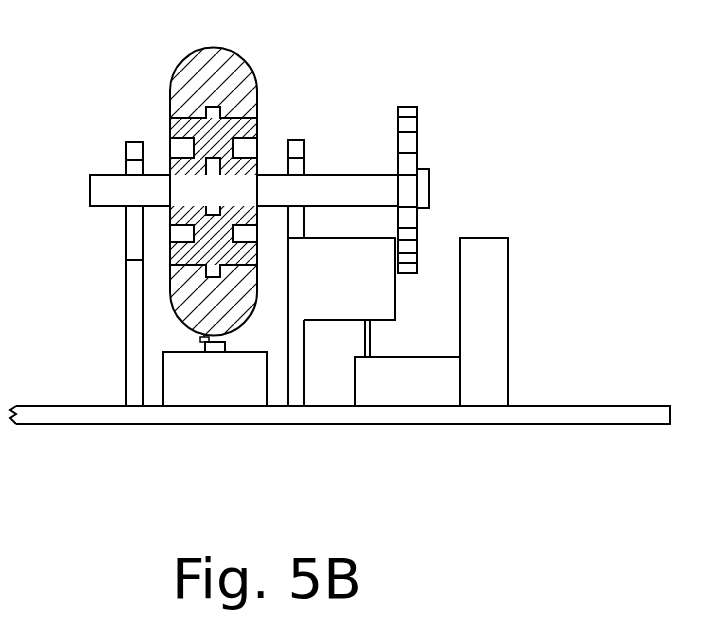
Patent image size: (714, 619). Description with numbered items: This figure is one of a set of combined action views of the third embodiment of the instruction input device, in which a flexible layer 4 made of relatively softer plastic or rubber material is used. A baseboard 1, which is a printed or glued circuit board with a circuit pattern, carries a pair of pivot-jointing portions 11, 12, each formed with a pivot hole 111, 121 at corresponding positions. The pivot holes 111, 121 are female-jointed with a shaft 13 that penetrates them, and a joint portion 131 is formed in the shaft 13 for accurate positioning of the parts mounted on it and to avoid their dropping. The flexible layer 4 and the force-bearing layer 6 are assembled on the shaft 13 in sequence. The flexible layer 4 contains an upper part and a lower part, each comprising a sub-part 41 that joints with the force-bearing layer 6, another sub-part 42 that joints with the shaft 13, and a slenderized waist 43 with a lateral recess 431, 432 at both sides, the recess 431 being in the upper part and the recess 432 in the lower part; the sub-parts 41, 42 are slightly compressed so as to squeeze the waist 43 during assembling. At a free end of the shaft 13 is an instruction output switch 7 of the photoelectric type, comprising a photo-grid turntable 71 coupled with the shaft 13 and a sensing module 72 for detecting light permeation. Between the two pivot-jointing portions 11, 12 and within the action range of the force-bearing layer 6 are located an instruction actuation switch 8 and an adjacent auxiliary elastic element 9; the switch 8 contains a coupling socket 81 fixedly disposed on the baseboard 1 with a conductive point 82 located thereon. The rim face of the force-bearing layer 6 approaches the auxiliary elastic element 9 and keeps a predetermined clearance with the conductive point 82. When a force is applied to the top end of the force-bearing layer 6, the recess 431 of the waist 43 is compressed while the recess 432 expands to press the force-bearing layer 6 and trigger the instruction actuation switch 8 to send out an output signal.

The baseboard 1 is at (593, 407).
The flexible layer 4 is at (188, 172).
The sub-part 41 is at (165, 127).
The sub-part 42 is at (160, 256).
The slenderized waist 43 is at (258, 152).
The lateral recess 431 is at (247, 142).
The lateral recess 432 is at (247, 236).
The force-bearing layer 6 is at (218, 67).
The instruction output switch 7 is at (455, 200).
The photo-grid turntable 71 is at (413, 138).
The sensing module 72 is at (355, 283).
The instruction actuation switch 8 is at (158, 396).
The coupling socket 81 is at (245, 387).
The conductive point 82 is at (217, 352).
The auxiliary elastic element 9 is at (203, 342).
The pivot-jointing portion 11 is at (133, 382).
The pivot hole 111 is at (120, 172).
The pivot-jointing portion 12 is at (297, 378).
The pivot hole 121 is at (310, 170).
The shaft 13 is at (93, 195).
The joint portion 131 is at (217, 208).